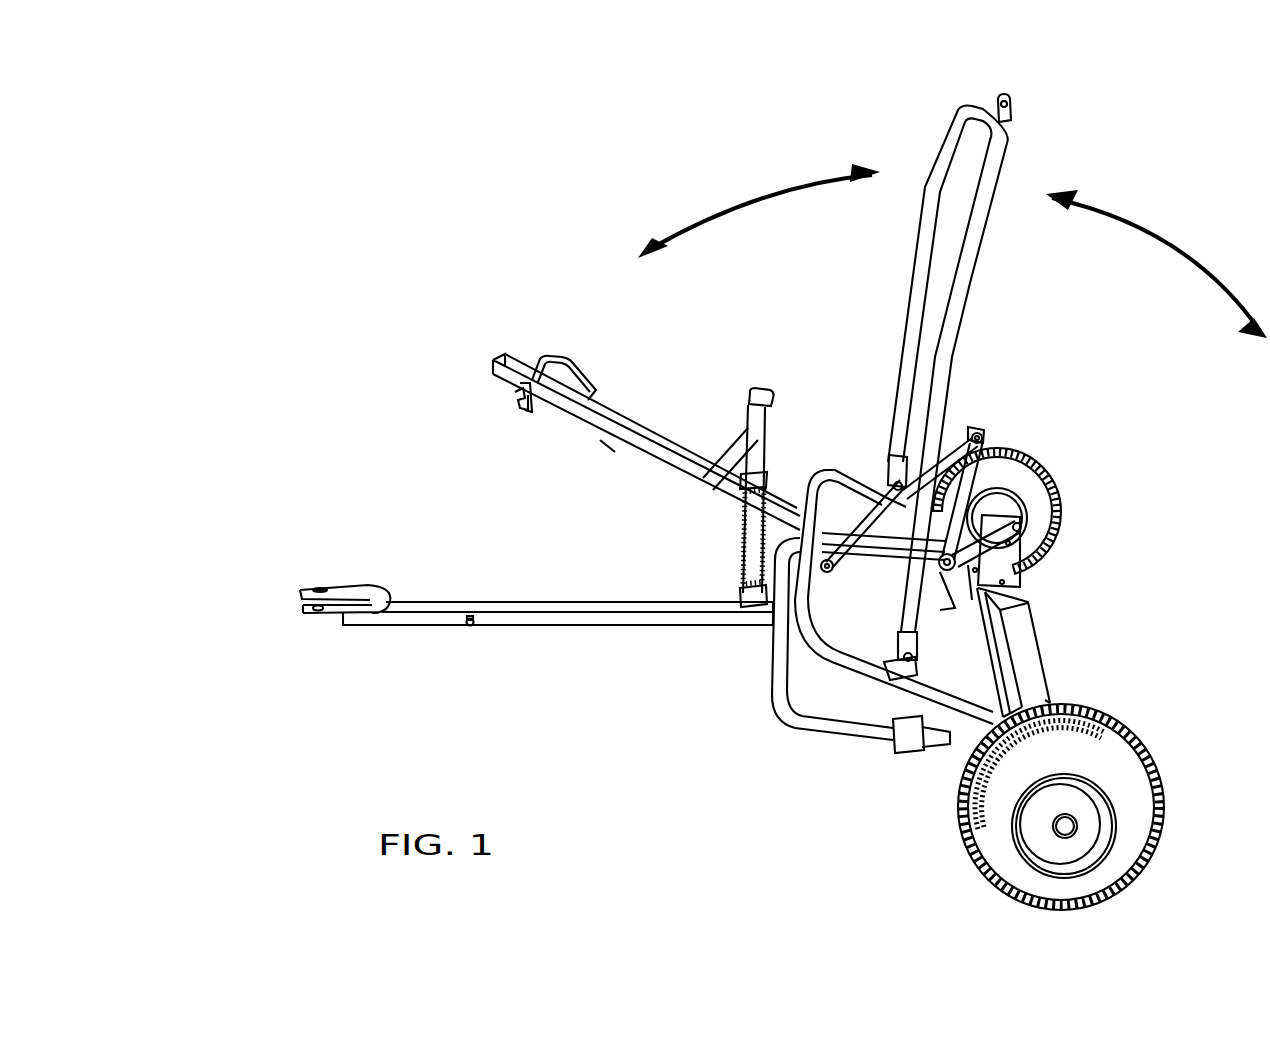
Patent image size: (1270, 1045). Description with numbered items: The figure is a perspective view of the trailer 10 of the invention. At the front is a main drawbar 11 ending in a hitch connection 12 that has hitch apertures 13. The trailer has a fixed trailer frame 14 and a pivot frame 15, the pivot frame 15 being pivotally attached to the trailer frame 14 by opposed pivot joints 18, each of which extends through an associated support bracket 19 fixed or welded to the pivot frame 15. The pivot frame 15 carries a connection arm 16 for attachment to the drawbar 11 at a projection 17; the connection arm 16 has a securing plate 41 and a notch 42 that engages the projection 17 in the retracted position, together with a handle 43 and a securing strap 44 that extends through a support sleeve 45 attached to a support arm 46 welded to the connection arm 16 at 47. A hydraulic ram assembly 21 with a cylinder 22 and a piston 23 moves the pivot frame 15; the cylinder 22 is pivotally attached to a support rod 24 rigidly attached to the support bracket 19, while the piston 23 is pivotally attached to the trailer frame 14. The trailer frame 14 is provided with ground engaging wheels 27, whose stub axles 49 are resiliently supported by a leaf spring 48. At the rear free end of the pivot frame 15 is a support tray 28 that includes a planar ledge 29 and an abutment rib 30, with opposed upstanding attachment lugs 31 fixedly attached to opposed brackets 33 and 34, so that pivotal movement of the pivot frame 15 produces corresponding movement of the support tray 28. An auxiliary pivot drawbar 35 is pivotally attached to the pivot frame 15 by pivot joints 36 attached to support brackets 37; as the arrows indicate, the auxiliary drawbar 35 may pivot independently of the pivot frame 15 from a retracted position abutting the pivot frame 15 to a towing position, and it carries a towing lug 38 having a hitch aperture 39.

The trailer 10 is at (1048, 400).
The main drawbar 11 is at (600, 612).
The hitch connection 12 is at (355, 588).
The hitch apertures 13 is at (318, 594).
The trailer frame 14 is at (830, 737).
The pivot frame 15 is at (782, 650).
The connection arm 16 is at (625, 425).
The projection 17 is at (470, 627).
The pivot joints 18 is at (948, 568).
The support bracket 19 is at (975, 600).
The hydraulic ram assembly 21 is at (958, 426).
The cylinder 22 is at (858, 500).
The piston 23 is at (808, 495).
The support rod 24 is at (975, 477).
The ground engaging wheels 27 is at (1145, 815).
The support tray 28 is at (1068, 638).
The planar ledge 29 is at (1045, 692).
The abutment rib 30 is at (1010, 663).
The attachment lugs 31 is at (1030, 600).
The bracket 33 is at (1010, 578).
The bracket 34 is at (1018, 530).
The auxiliary pivot drawbar 35 is at (1005, 152).
The pivot joints 36 is at (895, 650).
The support brackets 37 is at (870, 662).
The towing lug 38 is at (1012, 120).
The hitch aperture 39 is at (996, 104).
The securing plate 41 is at (528, 412).
The notch 42 is at (515, 398).
The handle 43 is at (568, 358).
The securing strap 44 is at (745, 530).
The support sleeve 45 is at (772, 398).
The support arm 46 is at (728, 458).
The weld location 47 is at (650, 462).
The leaf spring 48 is at (1015, 515).
The stub axles 49 is at (1068, 828).